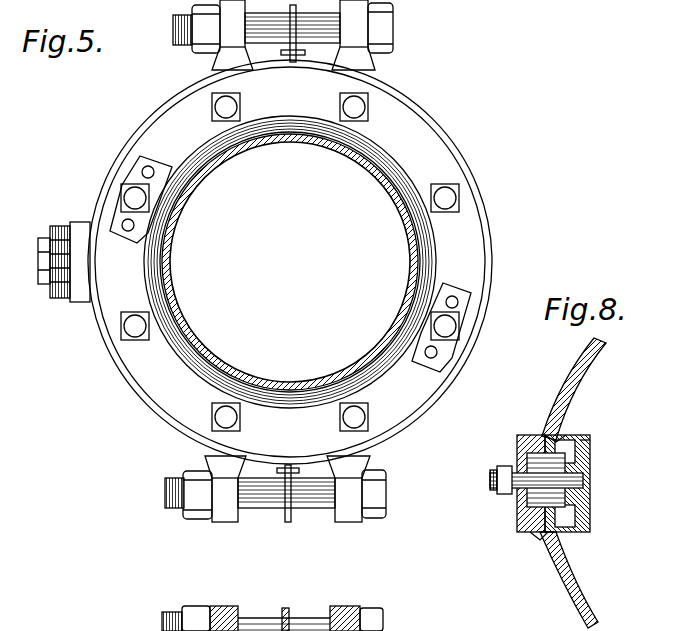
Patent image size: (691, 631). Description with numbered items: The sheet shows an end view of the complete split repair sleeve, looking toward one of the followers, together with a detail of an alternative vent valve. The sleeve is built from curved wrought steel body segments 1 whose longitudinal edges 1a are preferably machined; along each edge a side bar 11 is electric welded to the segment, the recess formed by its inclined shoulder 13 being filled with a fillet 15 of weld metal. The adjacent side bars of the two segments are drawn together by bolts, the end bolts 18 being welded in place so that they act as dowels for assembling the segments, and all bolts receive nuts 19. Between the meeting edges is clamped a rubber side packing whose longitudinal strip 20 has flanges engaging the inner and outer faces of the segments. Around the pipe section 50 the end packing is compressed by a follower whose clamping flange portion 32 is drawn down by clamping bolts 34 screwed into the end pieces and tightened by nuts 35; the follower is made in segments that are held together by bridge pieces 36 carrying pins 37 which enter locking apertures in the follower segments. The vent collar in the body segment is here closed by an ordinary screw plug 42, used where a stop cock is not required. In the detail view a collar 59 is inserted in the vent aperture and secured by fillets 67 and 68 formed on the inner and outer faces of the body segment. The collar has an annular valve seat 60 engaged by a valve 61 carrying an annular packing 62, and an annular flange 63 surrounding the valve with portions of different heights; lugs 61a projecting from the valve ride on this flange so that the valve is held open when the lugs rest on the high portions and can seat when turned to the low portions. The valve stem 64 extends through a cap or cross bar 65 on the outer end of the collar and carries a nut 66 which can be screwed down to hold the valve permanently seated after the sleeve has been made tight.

In FIG. 5, the shell or body portion 1 is at (457, 158).
In FIG. 5, the longitudinal edges of the body segment 1a is at (292, 64).
In FIG. 5, the side flange or bar 11 is at (228, 522).
In FIG. 5, the inclined shoulder 13 is at (390, 630).
In FIG. 5, the fillet 15 is at (262, 606).
In FIG. 5, the end bolt 18 is at (176, 36).
In FIG. 5, the nut 19 is at (200, 56).
In FIG. 5, the longitudinal strip of side packing 20 is at (287, 521).
In FIG. 5, the clamping flange portion of follower 32 is at (408, 138).
In FIG. 5, the clamping bolt 34 is at (448, 202).
In FIG. 5, the nut 35 is at (458, 190).
In FIG. 5, the bridge piece 36 is at (118, 193).
In FIG. 5, the bolt or pin 37 is at (150, 167).
In FIG. 5, the screw plug 42 is at (38, 254).
In FIG. 5, the pipe section 50 is at (265, 384).
In FIG. 8, the collar 59 is at (534, 432).
In FIG. 8, the annular valve seat 60 is at (556, 435).
In FIG. 8, the valve 61 is at (590, 462).
In FIG. 8, the lug 61a is at (598, 440).
In FIG. 8, the annular packing 62 is at (590, 515).
In FIG. 8, the annular flange 63 is at (574, 444).
In FIG. 8, the stem 64 is at (530, 470).
In FIG. 8, the cap or cross bar 65 is at (526, 444).
In FIG. 8, the nut 66 is at (505, 493).
In FIG. 8, the fillet 67 is at (540, 532).
In FIG. 8, the fillet 68 is at (558, 532).